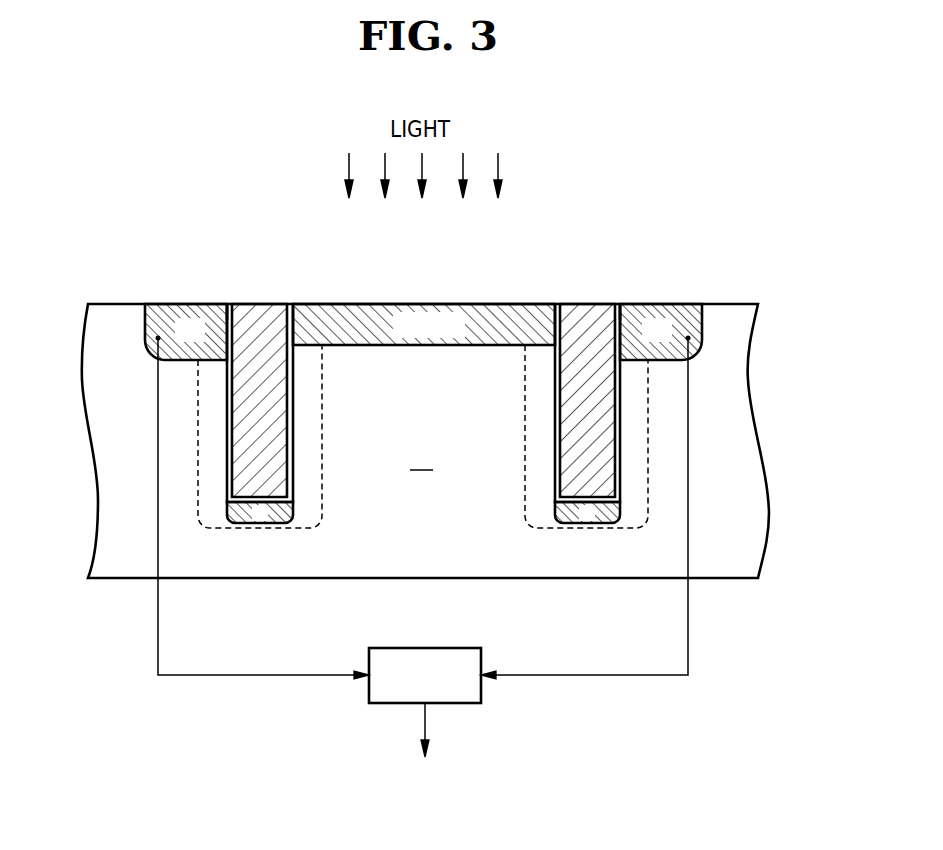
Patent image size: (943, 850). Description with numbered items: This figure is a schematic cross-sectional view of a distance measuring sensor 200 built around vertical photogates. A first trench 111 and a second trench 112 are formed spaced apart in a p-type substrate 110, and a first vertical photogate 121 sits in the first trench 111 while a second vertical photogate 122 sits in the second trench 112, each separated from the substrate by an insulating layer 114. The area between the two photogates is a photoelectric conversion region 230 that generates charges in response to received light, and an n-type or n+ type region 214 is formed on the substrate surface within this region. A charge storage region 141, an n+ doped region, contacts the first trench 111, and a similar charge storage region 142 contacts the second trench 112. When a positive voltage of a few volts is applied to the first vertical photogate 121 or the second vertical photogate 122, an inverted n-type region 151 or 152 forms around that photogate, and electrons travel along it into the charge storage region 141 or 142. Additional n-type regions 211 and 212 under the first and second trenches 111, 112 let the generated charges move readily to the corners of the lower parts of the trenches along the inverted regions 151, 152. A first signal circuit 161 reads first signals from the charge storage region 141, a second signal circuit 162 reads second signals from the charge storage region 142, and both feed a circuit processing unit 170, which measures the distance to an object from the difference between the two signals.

The distance measuring sensor 200 is at (94, 237).
The p-type substrate 110 is at (753, 443).
The first trench 111 is at (281, 306).
The second trench 112 is at (559, 306).
The insulating layer 114 is at (229, 306).
The first vertical photogate 121 is at (260, 307).
The second vertical photogate 122 is at (586, 307).
The charge storage region 141 is at (171, 304).
The charge storage region 142 is at (688, 304).
The n-type region 151 is at (320, 352).
The n-type region 152 is at (537, 360).
The n-type region 211 is at (280, 526).
The n-type region 212 is at (607, 526).
The n-type or n+ type region 214 is at (389, 304).
The photoelectric conversion region 230 is at (445, 290).
The first signal circuit 161 is at (263, 675).
The second signal circuit 162 is at (585, 675).
The circuit processing unit 170 is at (425, 720).